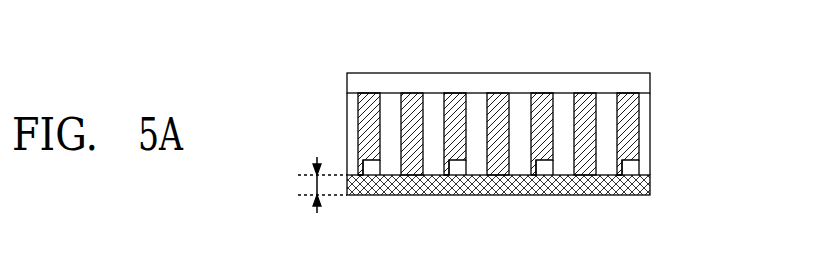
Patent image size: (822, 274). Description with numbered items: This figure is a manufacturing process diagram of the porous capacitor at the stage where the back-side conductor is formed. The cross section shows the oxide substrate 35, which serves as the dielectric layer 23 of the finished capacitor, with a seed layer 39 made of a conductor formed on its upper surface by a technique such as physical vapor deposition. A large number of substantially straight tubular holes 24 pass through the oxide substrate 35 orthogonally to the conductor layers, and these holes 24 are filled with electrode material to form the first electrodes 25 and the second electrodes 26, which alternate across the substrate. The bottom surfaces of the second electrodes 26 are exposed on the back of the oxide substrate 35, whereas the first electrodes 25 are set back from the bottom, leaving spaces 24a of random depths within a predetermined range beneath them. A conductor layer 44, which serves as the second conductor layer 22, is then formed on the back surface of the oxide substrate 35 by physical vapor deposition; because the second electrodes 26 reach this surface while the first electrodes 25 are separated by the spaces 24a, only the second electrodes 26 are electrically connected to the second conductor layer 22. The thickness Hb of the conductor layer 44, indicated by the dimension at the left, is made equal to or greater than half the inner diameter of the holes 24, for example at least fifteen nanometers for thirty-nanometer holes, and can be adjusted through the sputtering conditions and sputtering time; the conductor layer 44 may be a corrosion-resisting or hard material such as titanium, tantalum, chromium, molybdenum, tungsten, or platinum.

The seed layer 39 is at (650, 83).
The oxide substrate 35 is at (572, 136).
The dielectric layer 23 is at (572, 136).
The first electrodes 25 is at (369, 108).
The second electrodes 26 is at (412, 106).
The holes 24 is at (363, 175).
The spaces 24a is at (380, 173).
The conductor layer 44 is at (574, 185).
The second conductor layer 22 is at (650, 185).
The thickness of the conductor layer Hb is at (303, 192).